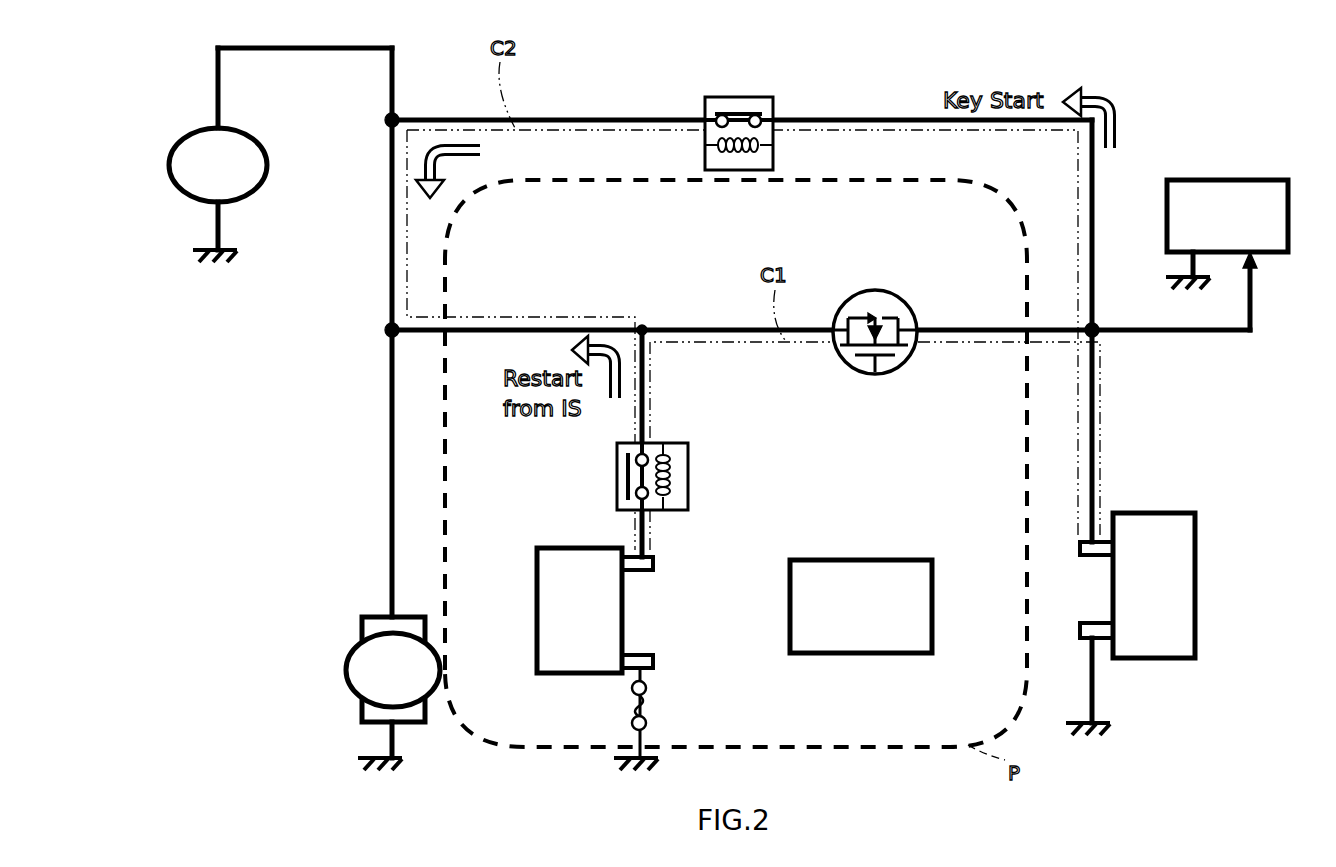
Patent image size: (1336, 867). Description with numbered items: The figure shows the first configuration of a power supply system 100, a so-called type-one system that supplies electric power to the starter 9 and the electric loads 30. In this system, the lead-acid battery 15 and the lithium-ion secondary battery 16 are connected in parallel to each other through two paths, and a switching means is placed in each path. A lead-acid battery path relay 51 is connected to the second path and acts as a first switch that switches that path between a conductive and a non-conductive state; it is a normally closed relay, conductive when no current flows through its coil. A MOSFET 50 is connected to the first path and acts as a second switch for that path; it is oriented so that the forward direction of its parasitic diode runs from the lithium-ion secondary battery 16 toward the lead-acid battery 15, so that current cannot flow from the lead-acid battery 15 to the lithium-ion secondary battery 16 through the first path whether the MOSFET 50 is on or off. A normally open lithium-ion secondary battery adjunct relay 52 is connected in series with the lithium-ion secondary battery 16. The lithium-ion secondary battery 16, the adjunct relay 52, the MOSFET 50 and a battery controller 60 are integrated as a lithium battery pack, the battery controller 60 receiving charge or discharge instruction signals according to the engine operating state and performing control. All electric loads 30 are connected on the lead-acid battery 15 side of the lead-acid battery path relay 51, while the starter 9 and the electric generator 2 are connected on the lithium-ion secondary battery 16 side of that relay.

The power supply system 100 is at (1208, 52).
The electric generator 2 is at (250, 198).
The starter 9 is at (355, 645).
The lead-acid battery 15 is at (1175, 513).
The lithium-ion secondary battery 16 is at (567, 535).
The electric loads 30 is at (1208, 180).
The MOSFET 50 is at (898, 368).
The lead-acid battery path relay 51 is at (773, 106).
The lithium-ion secondary battery adjunct relay 52 is at (688, 460).
The battery controller 60 is at (828, 560).